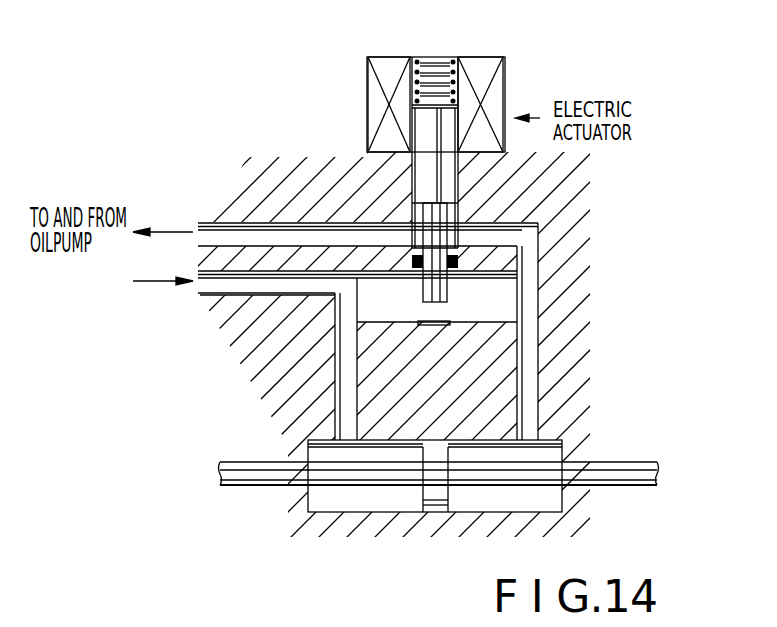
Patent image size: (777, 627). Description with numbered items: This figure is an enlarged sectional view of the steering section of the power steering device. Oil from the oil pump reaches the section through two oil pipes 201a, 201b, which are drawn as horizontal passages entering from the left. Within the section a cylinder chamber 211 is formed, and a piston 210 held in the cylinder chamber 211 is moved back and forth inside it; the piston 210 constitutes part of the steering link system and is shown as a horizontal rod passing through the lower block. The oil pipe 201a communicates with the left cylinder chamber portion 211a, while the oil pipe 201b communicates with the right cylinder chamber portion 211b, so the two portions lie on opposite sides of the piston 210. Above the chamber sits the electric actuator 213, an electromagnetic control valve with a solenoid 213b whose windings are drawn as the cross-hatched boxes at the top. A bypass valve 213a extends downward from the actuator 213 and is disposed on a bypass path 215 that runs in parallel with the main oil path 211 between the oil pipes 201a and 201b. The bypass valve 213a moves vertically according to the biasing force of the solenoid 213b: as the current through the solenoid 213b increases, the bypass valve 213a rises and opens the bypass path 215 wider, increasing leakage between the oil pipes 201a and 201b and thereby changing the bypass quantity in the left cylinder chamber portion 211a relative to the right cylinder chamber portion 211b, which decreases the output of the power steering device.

The electromagnetic control valve 213 is at (336, 104).
The solenoid 213b is at (500, 92).
The bypass valve 213a is at (432, 302).
The bypass path 215 is at (442, 313).
The oil pipe 201b is at (176, 228).
The oil pipe 201a is at (168, 287).
The cylinder chamber 211 is at (343, 514).
The left cylinder chamber portion 211a is at (397, 508).
The right cylinder chamber portion 211b is at (508, 508).
The piston 210 is at (436, 516).